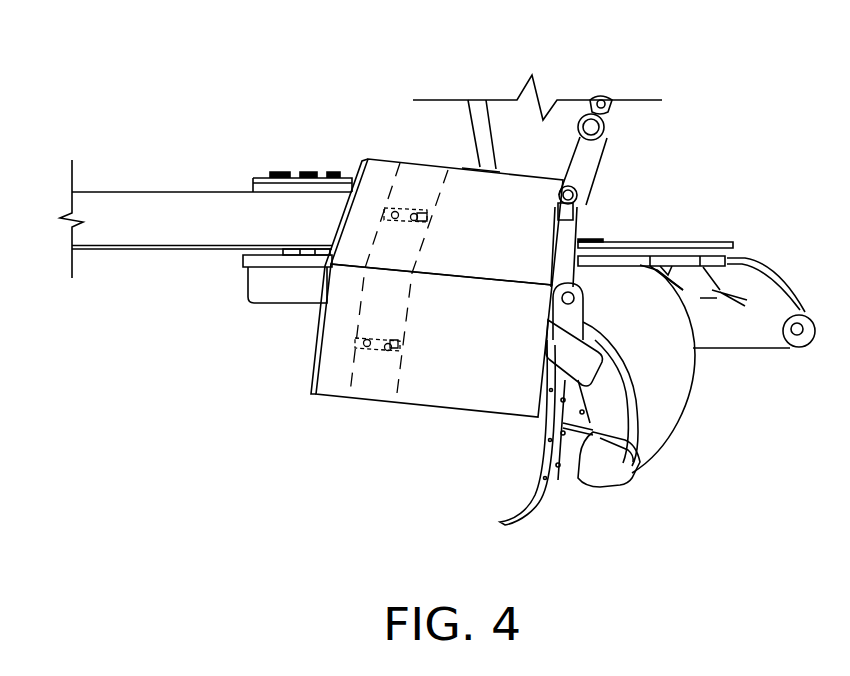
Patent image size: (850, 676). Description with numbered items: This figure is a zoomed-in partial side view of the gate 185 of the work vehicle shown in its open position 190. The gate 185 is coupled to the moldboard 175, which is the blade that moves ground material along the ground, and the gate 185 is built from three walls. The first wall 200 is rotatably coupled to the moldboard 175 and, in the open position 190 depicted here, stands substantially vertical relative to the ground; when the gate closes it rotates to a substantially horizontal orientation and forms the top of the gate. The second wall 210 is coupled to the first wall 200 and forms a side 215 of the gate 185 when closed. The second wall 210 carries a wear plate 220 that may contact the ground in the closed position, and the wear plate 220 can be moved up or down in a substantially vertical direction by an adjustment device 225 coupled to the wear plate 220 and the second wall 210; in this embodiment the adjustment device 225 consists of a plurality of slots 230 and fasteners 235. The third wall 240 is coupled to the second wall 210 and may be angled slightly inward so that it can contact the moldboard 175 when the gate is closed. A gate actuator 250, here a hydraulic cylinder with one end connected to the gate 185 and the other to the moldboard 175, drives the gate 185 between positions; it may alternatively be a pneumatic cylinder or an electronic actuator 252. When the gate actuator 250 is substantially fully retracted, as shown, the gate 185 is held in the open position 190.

The moldboard 175 is at (527, 494).
The gate 185 is at (266, 392).
The open position 190 is at (385, 124).
The first wall 200 is at (545, 316).
The second wall 210 is at (420, 163).
The side 215 is at (510, 398).
The wear plate 220 is at (345, 230).
The adjustment device 225 is at (428, 368).
The slots 230 is at (403, 221).
The fasteners 235 is at (415, 213).
The third wall 240 is at (378, 383).
The gate actuator 250 is at (608, 234).
The electronic actuator 252 is at (652, 225).